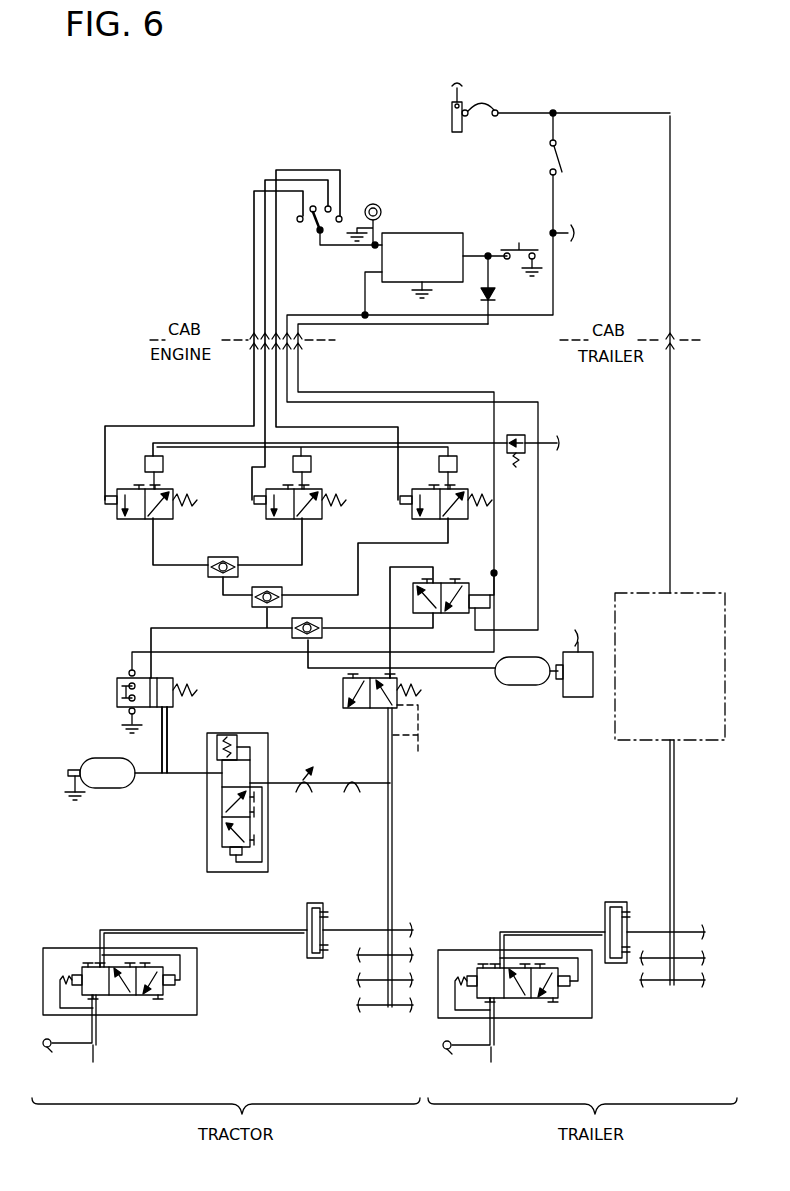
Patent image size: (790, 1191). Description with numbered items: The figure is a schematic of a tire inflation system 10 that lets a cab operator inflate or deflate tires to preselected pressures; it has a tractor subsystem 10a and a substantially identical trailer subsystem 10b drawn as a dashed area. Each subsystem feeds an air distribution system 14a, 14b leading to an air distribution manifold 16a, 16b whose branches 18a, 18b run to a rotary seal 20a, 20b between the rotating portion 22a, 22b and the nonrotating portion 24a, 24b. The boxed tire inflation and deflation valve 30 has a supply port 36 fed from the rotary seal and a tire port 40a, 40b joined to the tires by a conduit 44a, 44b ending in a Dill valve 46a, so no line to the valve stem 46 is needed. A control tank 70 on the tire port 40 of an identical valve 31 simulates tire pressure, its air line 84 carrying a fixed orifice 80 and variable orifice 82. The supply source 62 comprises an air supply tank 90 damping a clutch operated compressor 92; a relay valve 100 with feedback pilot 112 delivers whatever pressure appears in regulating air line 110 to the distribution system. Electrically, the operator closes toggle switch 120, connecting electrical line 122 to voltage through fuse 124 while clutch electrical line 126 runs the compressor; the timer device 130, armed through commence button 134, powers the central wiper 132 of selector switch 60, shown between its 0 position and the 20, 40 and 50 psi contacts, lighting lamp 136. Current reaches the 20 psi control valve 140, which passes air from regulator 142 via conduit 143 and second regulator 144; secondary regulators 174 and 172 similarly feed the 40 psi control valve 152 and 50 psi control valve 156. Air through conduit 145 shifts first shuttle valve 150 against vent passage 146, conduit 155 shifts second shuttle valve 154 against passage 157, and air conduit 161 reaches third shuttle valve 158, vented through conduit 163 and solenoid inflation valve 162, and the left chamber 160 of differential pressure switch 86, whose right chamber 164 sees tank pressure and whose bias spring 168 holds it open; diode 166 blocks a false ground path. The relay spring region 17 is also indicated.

The tire inflation system 10 is at (106, 220).
The off contact of selector switch 0 is at (296, 218).
The 20 PSI contact / selector position 20 is at (312, 206).
The tire port 40 is at (328, 205).
The 50 PSI contact / valve line 50 is at (342, 214).
The lamp 136 is at (375, 205).
The central wiper 132 is at (319, 246).
The selector switch 60 is at (316, 265).
The timer device 130 is at (457, 233).
The commence button 134 is at (521, 249).
The diode 166 is at (493, 302).
The fuse 124 is at (484, 102).
The toggle switch 120 is at (563, 170).
The electrical line 122 is at (555, 212).
The clutch electrical line 126 is at (572, 242).
The conduit 143 is at (408, 443).
The conventional regulator 142 is at (527, 440).
The second regulator 144 is at (164, 466).
The secondary regulator valve 174 is at (312, 466).
The secondary regulator 172 is at (452, 458).
The 20 psi solenoid operated control valve 140 is at (172, 498).
The 40 psi solenoid operated control valve 152 is at (320, 498).
The 50 psi solenoid operated control valve 156 is at (470, 498).
The conduit 145 is at (151, 562).
The passage 146 is at (305, 545).
The passage 157 is at (455, 532).
The first shuttle valve 150 is at (222, 557).
The conduit 155 is at (224, 600).
The second shuttle valve 154 is at (285, 590).
The air conduit 161 is at (235, 637).
The third shuttle valve 158 is at (325, 626).
The conduit 163 is at (430, 632).
The solenoid operated inflation valve 162 is at (495, 600).
The regulating air line 110 is at (310, 664).
The differential pressure switch 86 is at (190, 678).
The left chamber 160 is at (138, 732).
The bias spring 168 is at (197, 692).
The right chamber 164 is at (185, 715).
The relay valve 100 is at (418, 692).
The manual override 17 is at (420, 705).
The feedback pilot 112 is at (434, 762).
The air supply tank 90 is at (522, 657).
The supply source 62 is at (525, 686).
The clutch operated compressor 92 is at (583, 698).
The trailer subsystem 10b is at (688, 592).
The control tank 70 is at (117, 790).
The tire inflation and deflation valve 31 is at (228, 872).
The supply port 36 is at (262, 780).
The variable orifice 82 is at (298, 780).
The fixed orifice 80 is at (348, 778).
The air line 84 is at (330, 786).
The tractor subsystem 10a is at (143, 850).
The air distribution system 14a is at (395, 875).
The rotary seal 20a is at (333, 888).
The rotating portion 22a is at (306, 914).
The nonrotating portion 24a is at (328, 920).
The air distribution manifold 16a is at (402, 930).
The branches 18a is at (360, 960).
The tire inflation and deflation valve 30 is at (192, 1016).
The tire port 40a is at (96, 1030).
The Dill valve 46a is at (50, 1050).
The conduit 44a is at (96, 1060).
The air distribution system 14b is at (676, 850).
The rotary seal 20b is at (628, 870).
The rotating portion 22b is at (604, 912).
The nonrotating portion 24b is at (630, 920).
The air distribution manifold 16b is at (695, 930).
The branches 18b is at (703, 962).
The tire port 40b is at (496, 1028).
The valve stem 46 is at (448, 1052).
The conduit 44b is at (489, 1060).